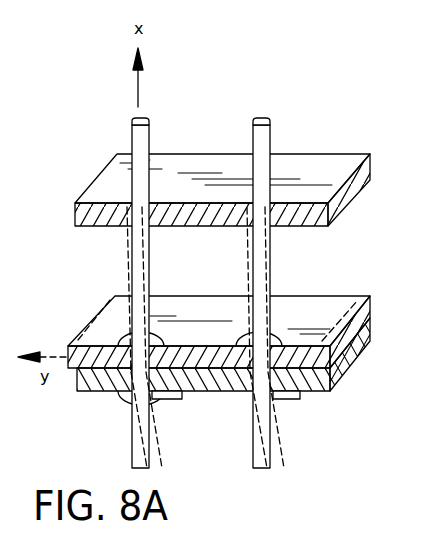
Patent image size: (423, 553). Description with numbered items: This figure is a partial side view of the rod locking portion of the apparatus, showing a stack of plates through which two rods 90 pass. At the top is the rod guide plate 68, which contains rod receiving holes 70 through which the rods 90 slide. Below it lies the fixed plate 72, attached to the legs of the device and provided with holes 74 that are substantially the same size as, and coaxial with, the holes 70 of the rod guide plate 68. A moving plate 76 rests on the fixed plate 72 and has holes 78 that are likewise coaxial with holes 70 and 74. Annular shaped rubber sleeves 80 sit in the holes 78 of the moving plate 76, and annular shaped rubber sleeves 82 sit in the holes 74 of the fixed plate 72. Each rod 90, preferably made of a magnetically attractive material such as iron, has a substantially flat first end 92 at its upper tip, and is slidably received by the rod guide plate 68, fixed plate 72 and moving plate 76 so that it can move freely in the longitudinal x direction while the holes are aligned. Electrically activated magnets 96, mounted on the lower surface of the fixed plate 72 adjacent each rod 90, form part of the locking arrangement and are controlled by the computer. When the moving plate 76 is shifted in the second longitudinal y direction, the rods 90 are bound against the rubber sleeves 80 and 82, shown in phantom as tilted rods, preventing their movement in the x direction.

The rod guide plate 68 is at (249, 168).
The rod receiving holes 70 is at (278, 213).
The fixed plate 72 is at (360, 358).
The holes 74 is at (220, 382).
The moving plate 76 is at (233, 310).
The holes 78 is at (278, 347).
The rubber sleeves 80 is at (120, 333).
The rubber sleeves 82 is at (112, 392).
The rods 90 is at (202, 275).
The first end 92 is at (136, 119).
The electrically activated magnets 96 is at (160, 399).